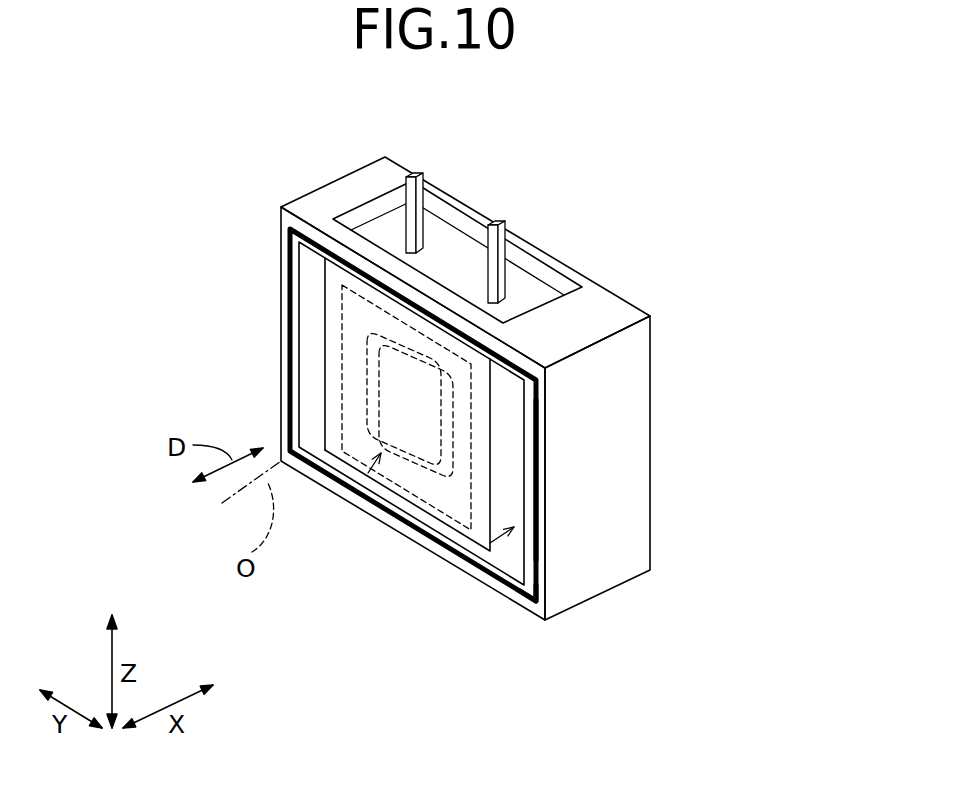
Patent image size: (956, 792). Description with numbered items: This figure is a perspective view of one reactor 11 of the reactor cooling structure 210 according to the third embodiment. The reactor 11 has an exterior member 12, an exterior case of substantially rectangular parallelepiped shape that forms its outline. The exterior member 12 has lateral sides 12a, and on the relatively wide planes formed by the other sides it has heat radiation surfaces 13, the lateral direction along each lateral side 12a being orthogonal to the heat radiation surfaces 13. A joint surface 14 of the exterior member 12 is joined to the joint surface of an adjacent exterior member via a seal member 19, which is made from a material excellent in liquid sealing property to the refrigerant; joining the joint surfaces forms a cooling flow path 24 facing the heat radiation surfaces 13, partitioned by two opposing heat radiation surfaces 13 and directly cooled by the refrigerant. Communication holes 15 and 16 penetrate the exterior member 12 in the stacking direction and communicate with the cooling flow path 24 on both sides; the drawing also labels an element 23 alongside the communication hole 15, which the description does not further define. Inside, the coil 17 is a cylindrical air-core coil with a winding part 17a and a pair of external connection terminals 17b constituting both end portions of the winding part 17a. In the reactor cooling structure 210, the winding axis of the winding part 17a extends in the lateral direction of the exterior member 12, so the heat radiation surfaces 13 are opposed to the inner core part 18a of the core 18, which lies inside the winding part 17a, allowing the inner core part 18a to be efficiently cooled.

The reactor 11 is at (373, 163).
The exterior member 12 is at (628, 551).
The lateral side 12a is at (327, 187).
The heat radiation surface 13 is at (340, 412).
The joint surface 14 is at (541, 603).
The communication hole 15 is at (538, 524).
The seal ring 23 is at (413, 415).
The communication hole 16 is at (315, 303).
The coil 17 is at (372, 498).
The winding part 17a is at (405, 457).
The external connection terminal 17b is at (495, 224).
The core 18 is at (420, 488).
The inner core part 18a is at (405, 405).
The seal member 19 is at (541, 526).
The cooling flow path 24 is at (354, 354).
The reactor cooling structure 210 is at (630, 262).